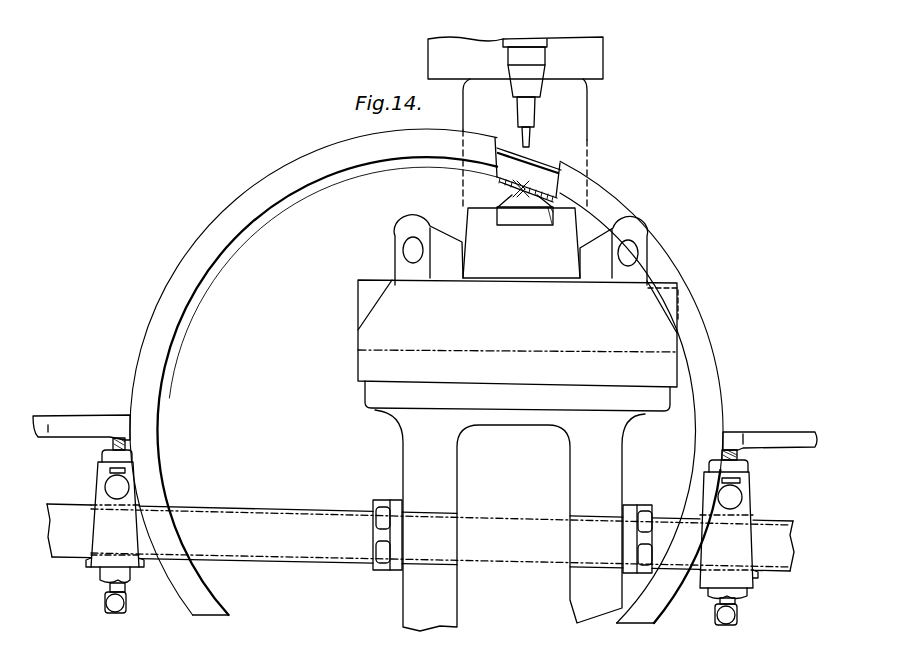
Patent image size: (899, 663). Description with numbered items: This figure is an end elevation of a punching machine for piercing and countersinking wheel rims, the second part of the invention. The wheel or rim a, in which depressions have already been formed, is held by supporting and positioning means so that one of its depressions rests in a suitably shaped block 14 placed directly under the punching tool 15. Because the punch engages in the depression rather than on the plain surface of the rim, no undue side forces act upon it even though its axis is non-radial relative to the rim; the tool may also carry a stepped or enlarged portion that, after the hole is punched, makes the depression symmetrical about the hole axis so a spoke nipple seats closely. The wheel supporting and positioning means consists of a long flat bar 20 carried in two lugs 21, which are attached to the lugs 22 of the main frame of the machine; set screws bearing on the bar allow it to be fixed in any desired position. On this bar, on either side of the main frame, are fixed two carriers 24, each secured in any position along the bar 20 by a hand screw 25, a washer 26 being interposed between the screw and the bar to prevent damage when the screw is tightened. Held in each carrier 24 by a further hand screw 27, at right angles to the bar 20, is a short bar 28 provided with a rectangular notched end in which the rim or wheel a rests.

The punching tool 15 is at (528, 112).
The suitably shaped block 14 is at (515, 196).
The wheel or rim a is at (268, 213).
The lugs 21 is at (398, 537).
The lugs of the main frame 22 is at (572, 546).
The hand screw 27 is at (72, 438).
The short bar 28 is at (107, 485).
The carriers 24 is at (115, 515).
The long flat bar 20 is at (763, 538).
The washer 26 is at (87, 565).
The hand screw 25 is at (121, 604).